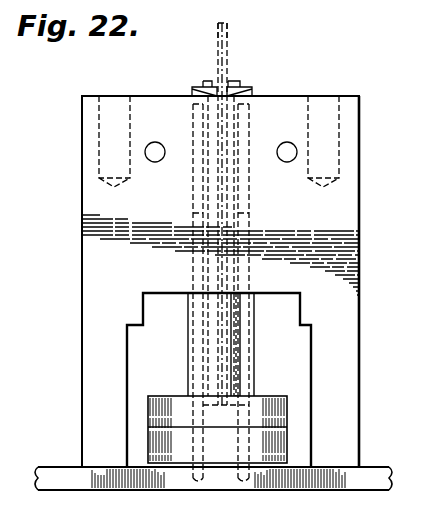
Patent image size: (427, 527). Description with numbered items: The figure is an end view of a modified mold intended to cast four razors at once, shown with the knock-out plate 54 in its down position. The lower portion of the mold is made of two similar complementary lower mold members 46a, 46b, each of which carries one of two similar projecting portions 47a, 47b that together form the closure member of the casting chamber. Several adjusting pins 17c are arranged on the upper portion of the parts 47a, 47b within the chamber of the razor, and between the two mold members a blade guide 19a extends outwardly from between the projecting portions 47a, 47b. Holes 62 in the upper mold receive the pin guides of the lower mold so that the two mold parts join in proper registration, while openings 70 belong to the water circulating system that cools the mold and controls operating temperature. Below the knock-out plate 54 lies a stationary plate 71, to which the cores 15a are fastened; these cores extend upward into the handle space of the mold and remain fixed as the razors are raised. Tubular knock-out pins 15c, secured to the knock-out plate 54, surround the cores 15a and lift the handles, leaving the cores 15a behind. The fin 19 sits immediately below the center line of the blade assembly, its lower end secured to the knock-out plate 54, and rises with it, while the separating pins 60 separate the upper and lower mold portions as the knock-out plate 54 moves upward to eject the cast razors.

The blade guide 19a is at (228, 23).
The fin 19 is at (228, 48).
The adjusting pins 17c is at (205, 84).
The projecting portion 47a is at (253, 91).
The projecting portion 47b is at (193, 91).
The holes 62 is at (105, 124).
The openings 70 is at (156, 142).
The lower mold member 46a is at (357, 238).
The lower mold member 46b is at (88, 206).
The cores 15a is at (270, 213).
The tubular knock-out pins 15c is at (266, 351).
The separating pins 60 is at (230, 322).
The knock-out plate 54 is at (150, 433).
The stationary plate 71 is at (368, 470).